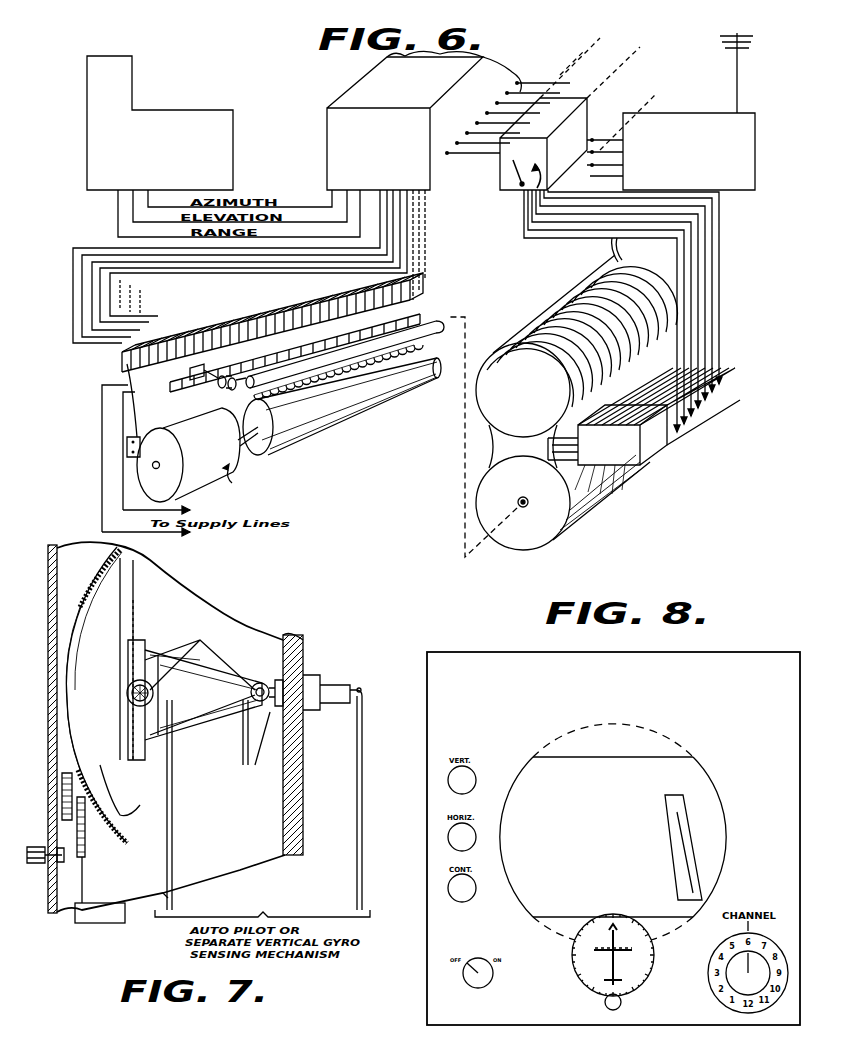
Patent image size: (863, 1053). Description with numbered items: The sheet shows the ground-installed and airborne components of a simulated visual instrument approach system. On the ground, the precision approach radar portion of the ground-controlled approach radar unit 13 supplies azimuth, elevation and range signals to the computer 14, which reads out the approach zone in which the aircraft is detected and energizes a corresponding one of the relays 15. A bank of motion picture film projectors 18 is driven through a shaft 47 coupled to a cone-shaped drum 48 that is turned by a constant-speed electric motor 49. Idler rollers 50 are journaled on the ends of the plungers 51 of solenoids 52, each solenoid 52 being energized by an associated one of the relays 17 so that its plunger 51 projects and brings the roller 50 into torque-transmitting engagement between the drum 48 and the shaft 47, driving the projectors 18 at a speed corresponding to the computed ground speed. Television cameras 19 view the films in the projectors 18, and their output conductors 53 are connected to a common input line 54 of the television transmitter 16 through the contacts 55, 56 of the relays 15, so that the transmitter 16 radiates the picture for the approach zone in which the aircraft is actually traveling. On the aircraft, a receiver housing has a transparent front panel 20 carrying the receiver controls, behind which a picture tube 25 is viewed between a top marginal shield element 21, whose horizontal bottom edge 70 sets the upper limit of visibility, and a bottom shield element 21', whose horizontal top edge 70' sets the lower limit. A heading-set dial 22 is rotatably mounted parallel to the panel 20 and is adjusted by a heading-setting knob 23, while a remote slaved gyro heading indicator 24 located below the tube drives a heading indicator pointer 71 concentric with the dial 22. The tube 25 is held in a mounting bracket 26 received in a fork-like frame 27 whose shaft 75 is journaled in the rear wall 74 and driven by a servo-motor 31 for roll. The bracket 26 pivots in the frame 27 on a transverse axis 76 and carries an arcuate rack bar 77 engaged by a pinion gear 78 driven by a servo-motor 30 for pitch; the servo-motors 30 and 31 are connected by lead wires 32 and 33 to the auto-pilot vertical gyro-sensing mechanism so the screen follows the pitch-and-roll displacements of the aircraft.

In FIG. 6, the ground-controlled approach radar unit 13 is at (162, 110).
In FIG. 6, the computer 14 is at (332, 104).
In FIG. 6, the relays 15 is at (500, 186).
In FIG. 6, the television transmitter 16 is at (755, 186).
In FIG. 6, the relays 17 is at (125, 366).
In FIG. 6, the motion picture film projectors 18 is at (536, 330).
In FIG. 6, the television cameras 19 is at (648, 468).
In FIG. 7, the transparent front panel 20 is at (54, 546).
In FIG. 8, the transparent front panel 20 is at (790, 782).
In FIG. 7, the top picture tube marginal shield element 21 is at (95, 695).
In FIG. 8, the top picture tube marginal shield element 21 is at (629, 806).
In FIG. 7, the bottom picture tube marginal shield element 21' is at (107, 821).
In FIG. 8, the bottom picture tube marginal shield element 21' is at (608, 955).
In FIG. 7, the heading-set dial 22 is at (77, 832).
In FIG. 8, the heading-set dial 22 is at (655, 963).
In FIG. 7, the heading-setting knob 23 is at (36, 864).
In FIG. 8, the heading-setting knob 23 is at (604, 1002).
In FIG. 7, the remote slaved gyro heading indicator 24 is at (120, 905).
In FIG. 7, the picture tube 25 is at (162, 566).
In FIG. 8, the picture tube 25 is at (527, 772).
In FIG. 7, the mounting bracket 26 is at (140, 600).
In FIG. 7, the fork-like frame 27 is at (250, 670).
In FIG. 7, the servo-motor 30 is at (128, 698).
In FIG. 7, the servo-motor 31 is at (340, 686).
In FIG. 7, the lead wires 32 is at (170, 902).
In FIG. 7, the lead wires 33 is at (364, 872).
In FIG. 6, the shaft 47 is at (444, 320).
In FIG. 6, the cone-shaped drum 48 is at (352, 406).
In FIG. 6, the constant-speed electric motor 49 is at (232, 474).
In FIG. 6, the idler rollers 50 is at (336, 370).
In FIG. 6, the plungers 51 is at (230, 390).
In FIG. 6, the solenoids 52 is at (192, 380).
In FIG. 6, the output conductors 53 is at (622, 262).
In FIG. 6, the common input line 54 is at (596, 160).
In FIG. 6, the contacts 55 is at (512, 162).
In FIG. 6, the contacts 56 is at (536, 172).
In FIG. 7, the horizontal bottom edge 70 is at (87, 653).
In FIG. 8, the horizontal bottom edge 70 is at (574, 837).
In FIG. 7, the horizontal top edge 70' is at (103, 758).
In FIG. 8, the horizontal top edge 70' is at (637, 856).
In FIG. 7, the heading indicator pointer 71 is at (62, 790).
In FIG. 8, the heading indicator pointer 71 is at (618, 922).
In FIG. 7, the rear wall 74 is at (300, 778).
In FIG. 7, the shaft 75 is at (306, 672).
In FIG. 7, the transverse axis 76 is at (257, 762).
In FIG. 7, the arcuate rack bar 77 is at (180, 650).
In FIG. 7, the pinion gear 78 is at (126, 684).